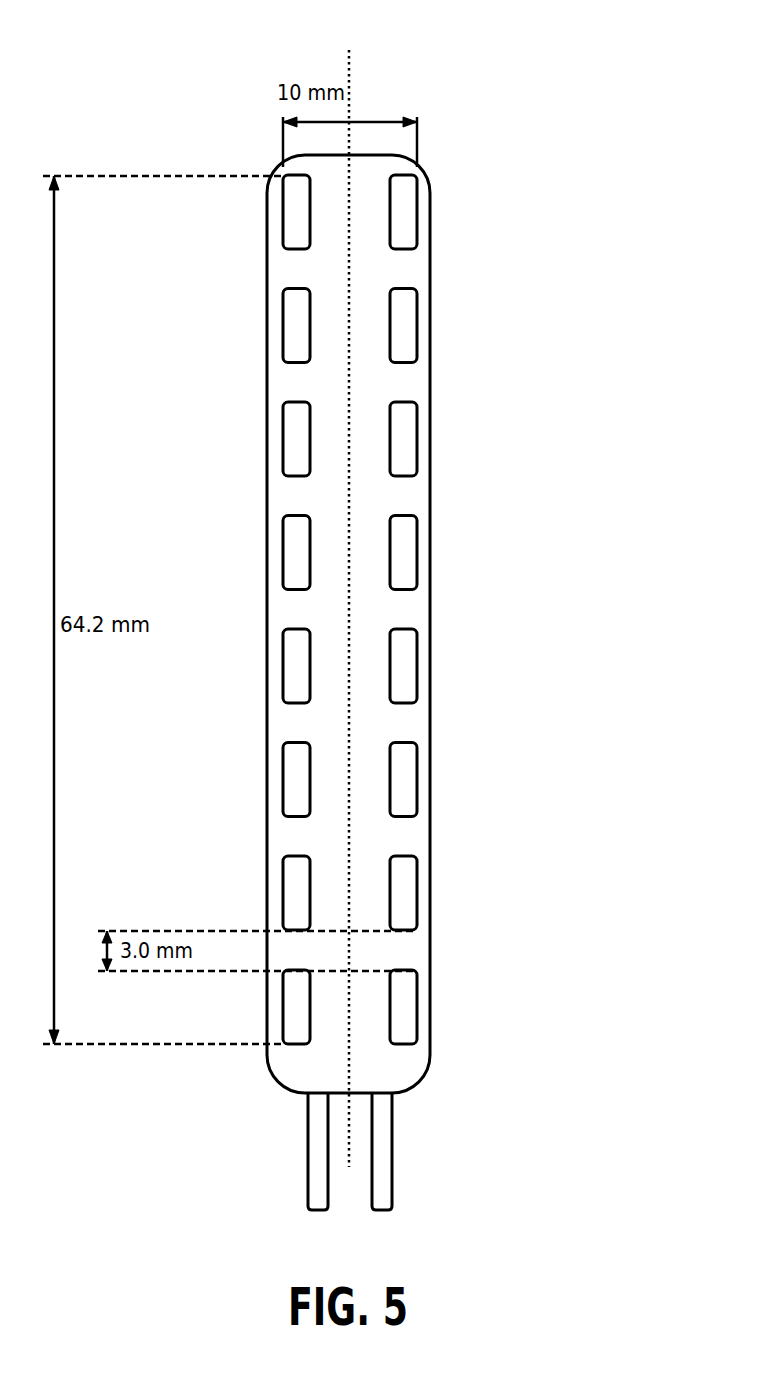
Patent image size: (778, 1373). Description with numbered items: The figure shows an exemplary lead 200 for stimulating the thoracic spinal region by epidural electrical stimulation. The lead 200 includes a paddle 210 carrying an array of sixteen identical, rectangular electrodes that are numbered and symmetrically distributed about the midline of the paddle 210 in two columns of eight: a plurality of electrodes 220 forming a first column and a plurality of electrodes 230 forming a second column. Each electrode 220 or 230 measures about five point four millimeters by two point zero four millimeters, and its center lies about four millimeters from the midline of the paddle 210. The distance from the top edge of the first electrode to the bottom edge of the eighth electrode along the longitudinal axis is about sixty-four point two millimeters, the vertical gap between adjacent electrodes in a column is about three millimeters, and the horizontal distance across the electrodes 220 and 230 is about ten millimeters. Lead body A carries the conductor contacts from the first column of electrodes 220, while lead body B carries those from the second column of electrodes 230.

The lead 200 is at (486, 148).
The paddle 210 is at (431, 600).
The electrodes of a first column 220 is at (283, 243).
The electrodes of a second column 230 is at (417, 427).